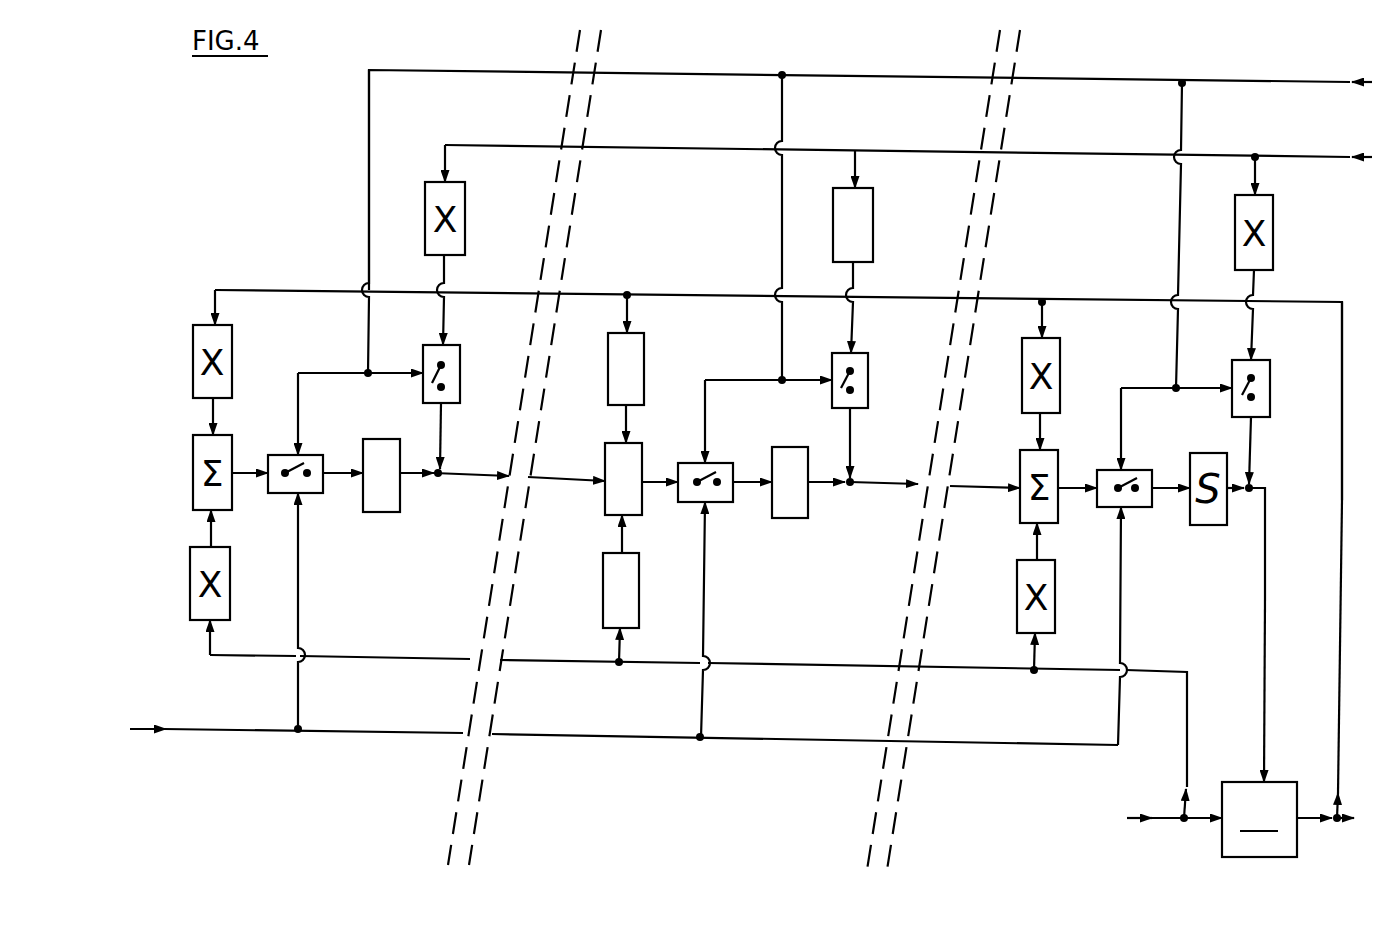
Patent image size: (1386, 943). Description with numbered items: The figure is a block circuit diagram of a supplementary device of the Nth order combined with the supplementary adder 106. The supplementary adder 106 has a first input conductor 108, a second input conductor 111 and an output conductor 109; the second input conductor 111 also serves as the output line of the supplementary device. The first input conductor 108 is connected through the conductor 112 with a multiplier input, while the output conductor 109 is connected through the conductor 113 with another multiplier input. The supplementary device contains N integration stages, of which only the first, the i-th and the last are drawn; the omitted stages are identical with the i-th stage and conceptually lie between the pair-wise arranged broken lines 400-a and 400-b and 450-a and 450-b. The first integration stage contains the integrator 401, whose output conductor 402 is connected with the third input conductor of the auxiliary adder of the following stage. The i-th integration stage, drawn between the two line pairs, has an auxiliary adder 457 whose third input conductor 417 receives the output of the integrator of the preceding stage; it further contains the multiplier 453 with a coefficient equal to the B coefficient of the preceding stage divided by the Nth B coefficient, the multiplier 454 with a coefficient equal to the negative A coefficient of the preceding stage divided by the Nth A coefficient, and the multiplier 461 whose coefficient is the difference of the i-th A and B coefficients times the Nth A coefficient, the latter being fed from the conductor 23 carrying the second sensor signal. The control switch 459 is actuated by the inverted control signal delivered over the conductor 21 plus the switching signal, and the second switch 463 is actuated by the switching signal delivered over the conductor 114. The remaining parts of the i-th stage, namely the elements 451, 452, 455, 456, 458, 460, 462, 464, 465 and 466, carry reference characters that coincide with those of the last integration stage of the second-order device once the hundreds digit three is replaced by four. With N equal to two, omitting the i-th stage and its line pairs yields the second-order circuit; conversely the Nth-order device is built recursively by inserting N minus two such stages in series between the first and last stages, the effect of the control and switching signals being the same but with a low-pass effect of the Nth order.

The conductor 114 is at (1318, 85).
The conductor 23 is at (1318, 160).
The conductor 21 is at (200, 731).
The integrator 401 is at (380, 512).
The output conductor 402 is at (437, 478).
The third input conductor 417 is at (560, 485).
The broken line 400-a is at (455, 808).
The broken line 400-b is at (478, 800).
The broken line 450-a is at (870, 808).
The broken line 450-b is at (892, 805).
The storage (delay) element 451 is at (790, 518).
The output line of section 452 is at (880, 487).
The multiplier 453 is at (674, 592).
The multiplier 454 is at (644, 362).
The multiplier output line 455 is at (618, 540).
The multiplier output line 456 is at (628, 412).
The auxiliary adder 457 is at (605, 456).
The adder output line 458 is at (650, 487).
The control switch 459 is at (720, 463).
The switch output line 460 is at (745, 487).
The multiplier 461 is at (873, 215).
The multiplier output line 462 is at (853, 322).
The second switch 463 is at (868, 400).
The switch output line 464 is at (853, 480).
The control line 465 is at (786, 378).
The control line 466 is at (708, 378).
The supplementary adder 106 is at (1224, 840).
The first input conductor 108 is at (1165, 822).
The output conductor 109 is at (1336, 822).
The second input conductor 111 is at (1265, 700).
The conductor 112 is at (1187, 700).
The conductor 113 is at (1340, 656).